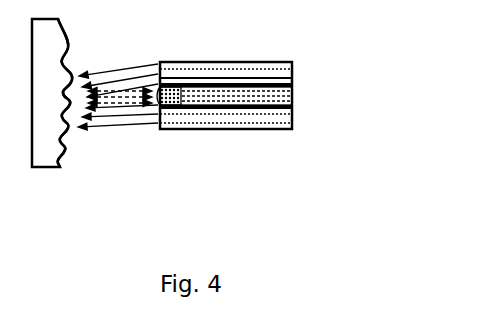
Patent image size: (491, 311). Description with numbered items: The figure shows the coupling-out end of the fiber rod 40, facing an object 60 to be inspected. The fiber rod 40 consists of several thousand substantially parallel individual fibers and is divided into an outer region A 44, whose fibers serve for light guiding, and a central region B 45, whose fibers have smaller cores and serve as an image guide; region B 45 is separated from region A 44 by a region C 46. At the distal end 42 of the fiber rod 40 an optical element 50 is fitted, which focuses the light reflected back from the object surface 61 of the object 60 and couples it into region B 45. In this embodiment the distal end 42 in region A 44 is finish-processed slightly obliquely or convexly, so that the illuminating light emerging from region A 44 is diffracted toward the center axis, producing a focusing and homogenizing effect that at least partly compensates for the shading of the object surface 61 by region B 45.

The fiber rod 40 is at (259, 143).
The distal end 42 is at (161, 106).
The region A 44 is at (273, 77).
The region B 45 is at (292, 108).
The region C 46 is at (221, 105).
The optical element 50 is at (177, 105).
The object 60 is at (46, 167).
The object surface 61 is at (64, 136).